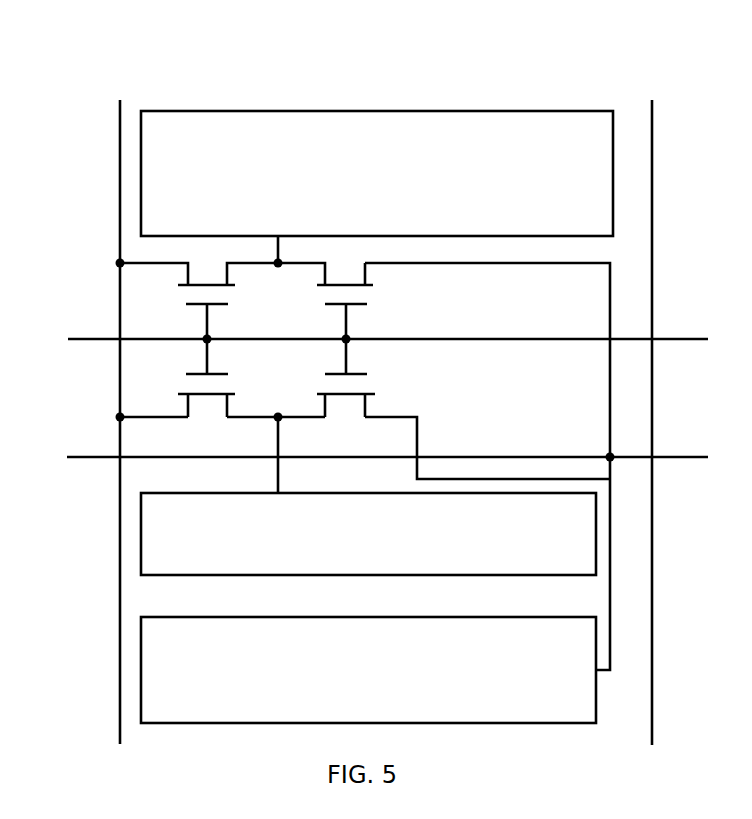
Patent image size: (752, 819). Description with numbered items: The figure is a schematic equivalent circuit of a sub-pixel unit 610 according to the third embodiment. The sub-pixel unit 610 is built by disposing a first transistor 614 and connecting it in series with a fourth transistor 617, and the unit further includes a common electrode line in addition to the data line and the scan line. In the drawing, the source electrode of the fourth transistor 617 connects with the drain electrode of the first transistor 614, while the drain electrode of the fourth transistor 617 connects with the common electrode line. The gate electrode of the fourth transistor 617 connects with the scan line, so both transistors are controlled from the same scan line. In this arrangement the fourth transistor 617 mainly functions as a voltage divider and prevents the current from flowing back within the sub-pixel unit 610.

The sub-pixel unit 610 is at (391, 38).
The first transistor 614 is at (140, 312).
The fourth transistor 617 is at (348, 250).